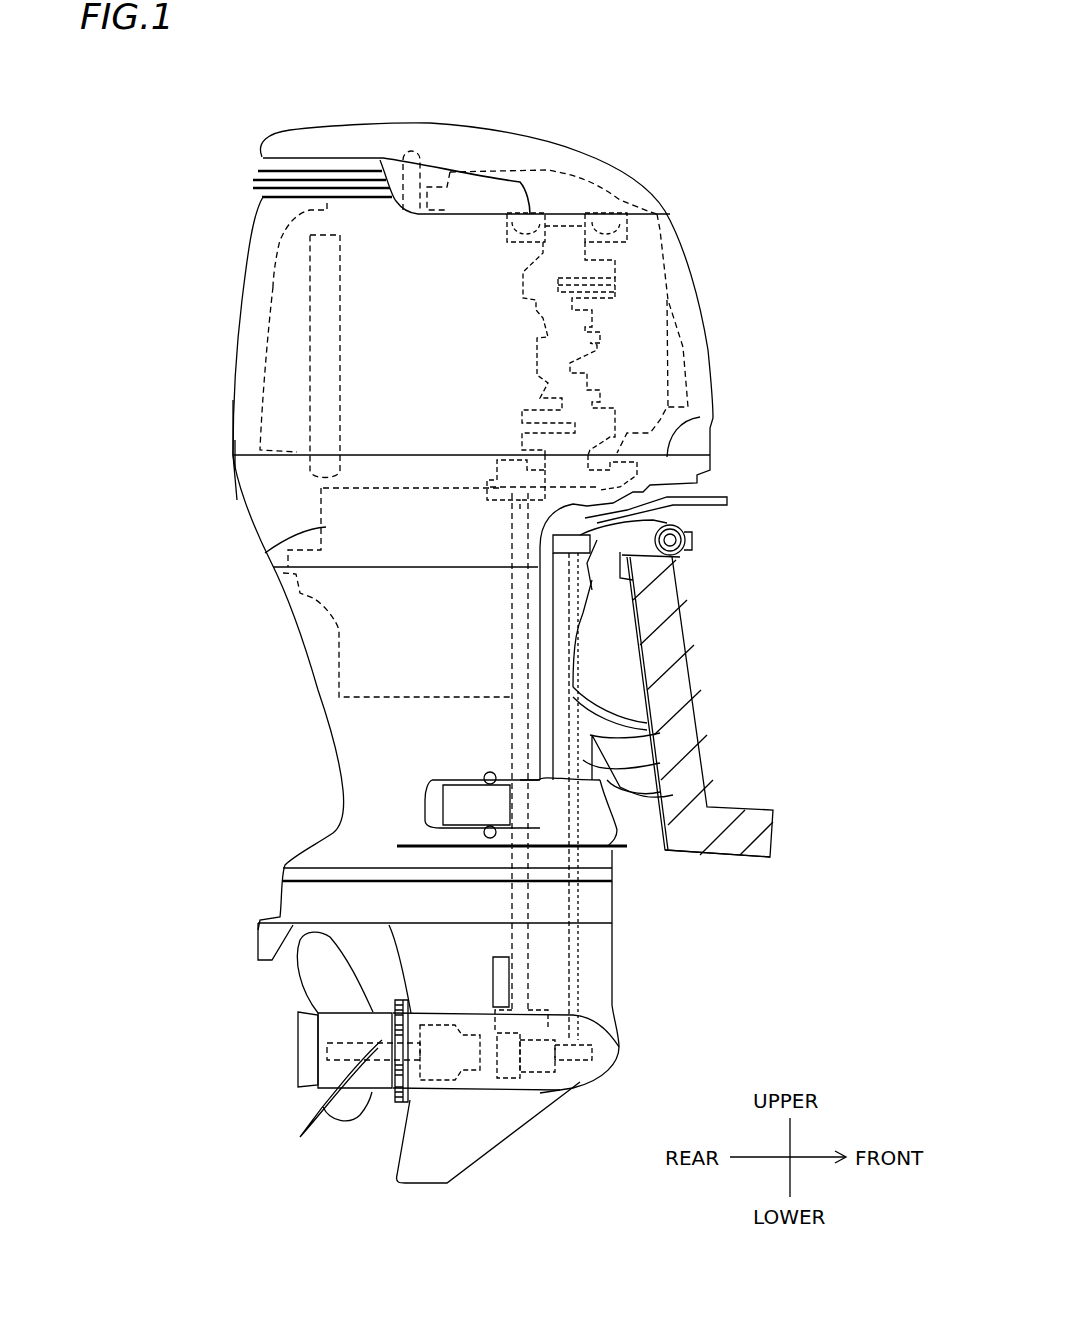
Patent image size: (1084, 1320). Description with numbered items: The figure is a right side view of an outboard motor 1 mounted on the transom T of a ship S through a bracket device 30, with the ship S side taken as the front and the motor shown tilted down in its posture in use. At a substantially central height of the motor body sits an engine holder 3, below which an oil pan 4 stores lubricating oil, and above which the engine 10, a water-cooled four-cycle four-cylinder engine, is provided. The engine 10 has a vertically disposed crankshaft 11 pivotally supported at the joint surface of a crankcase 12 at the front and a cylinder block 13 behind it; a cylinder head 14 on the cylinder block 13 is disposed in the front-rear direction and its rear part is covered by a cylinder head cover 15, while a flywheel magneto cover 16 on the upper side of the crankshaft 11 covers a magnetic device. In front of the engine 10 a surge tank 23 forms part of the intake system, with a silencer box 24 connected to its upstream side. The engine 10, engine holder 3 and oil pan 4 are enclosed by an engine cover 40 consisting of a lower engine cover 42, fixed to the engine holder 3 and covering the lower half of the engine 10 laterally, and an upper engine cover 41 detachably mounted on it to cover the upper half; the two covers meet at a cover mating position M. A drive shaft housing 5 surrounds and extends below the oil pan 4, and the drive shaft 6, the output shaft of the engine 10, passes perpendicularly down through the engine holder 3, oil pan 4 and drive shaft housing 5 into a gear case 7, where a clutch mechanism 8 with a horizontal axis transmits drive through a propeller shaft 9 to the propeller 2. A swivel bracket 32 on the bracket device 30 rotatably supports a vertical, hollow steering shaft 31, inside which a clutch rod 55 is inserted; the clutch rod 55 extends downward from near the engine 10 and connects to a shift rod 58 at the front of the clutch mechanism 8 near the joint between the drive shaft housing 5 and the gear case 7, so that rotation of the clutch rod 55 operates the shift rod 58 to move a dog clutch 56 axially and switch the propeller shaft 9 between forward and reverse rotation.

The outboard motor 1 is at (235, 132).
The propeller 2 is at (317, 982).
The engine holder 3 is at (265, 553).
The oil pan 4 is at (352, 660).
The drive shaft housing 5 is at (352, 757).
The drive shaft 6 is at (527, 640).
The gear case 7 is at (600, 962).
The clutch mechanism 8 is at (457, 1003).
The propeller shaft 9 is at (453, 1052).
The engine 10 is at (459, 162).
The crankshaft 11 is at (600, 360).
The crankcase 12 is at (633, 290).
The cylinder block 13 is at (473, 277).
The cylinder head 14 is at (390, 288).
The cylinder head cover 15 is at (283, 261).
The flywheel magneto cover 16 is at (583, 193).
The surge tank 23 is at (670, 352).
The silencer box 24 is at (653, 227).
The bracket device 30 is at (640, 807).
The steering shaft 31 is at (583, 763).
The swivel bracket 32 is at (602, 753).
The engine cover 40 is at (168, 412).
The upper engine cover 41 is at (243, 432).
The lower engine cover 42 is at (243, 468).
The clutch rod 55 is at (577, 585).
The dog clutch 56 is at (523, 1057).
The shift rod 58 is at (577, 997).
The cover mating position M is at (700, 417).
The transom T is at (670, 702).
The ship S is at (745, 867).